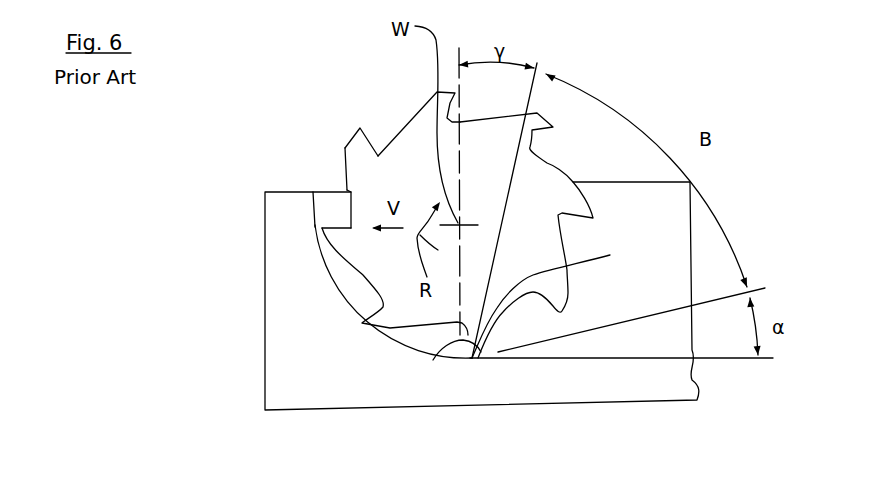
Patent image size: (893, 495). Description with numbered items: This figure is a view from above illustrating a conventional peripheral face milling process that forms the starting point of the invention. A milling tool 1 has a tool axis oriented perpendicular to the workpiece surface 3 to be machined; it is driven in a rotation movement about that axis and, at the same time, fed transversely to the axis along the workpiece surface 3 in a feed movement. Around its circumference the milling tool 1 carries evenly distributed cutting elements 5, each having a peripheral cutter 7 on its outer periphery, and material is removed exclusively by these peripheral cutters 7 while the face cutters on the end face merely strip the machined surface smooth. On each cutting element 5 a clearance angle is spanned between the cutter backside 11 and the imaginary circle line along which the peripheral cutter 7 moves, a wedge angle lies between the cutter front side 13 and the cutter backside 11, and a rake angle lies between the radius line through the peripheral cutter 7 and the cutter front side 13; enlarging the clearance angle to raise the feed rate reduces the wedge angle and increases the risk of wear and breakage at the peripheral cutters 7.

The milling tool 1 is at (401, 122).
The workpiece surface 3 is at (312, 340).
The cutting element 5 is at (342, 138).
The peripheral cutter 7 is at (361, 127).
The cutter backside 11 is at (610, 255).
The cutter front side 13 is at (463, 340).